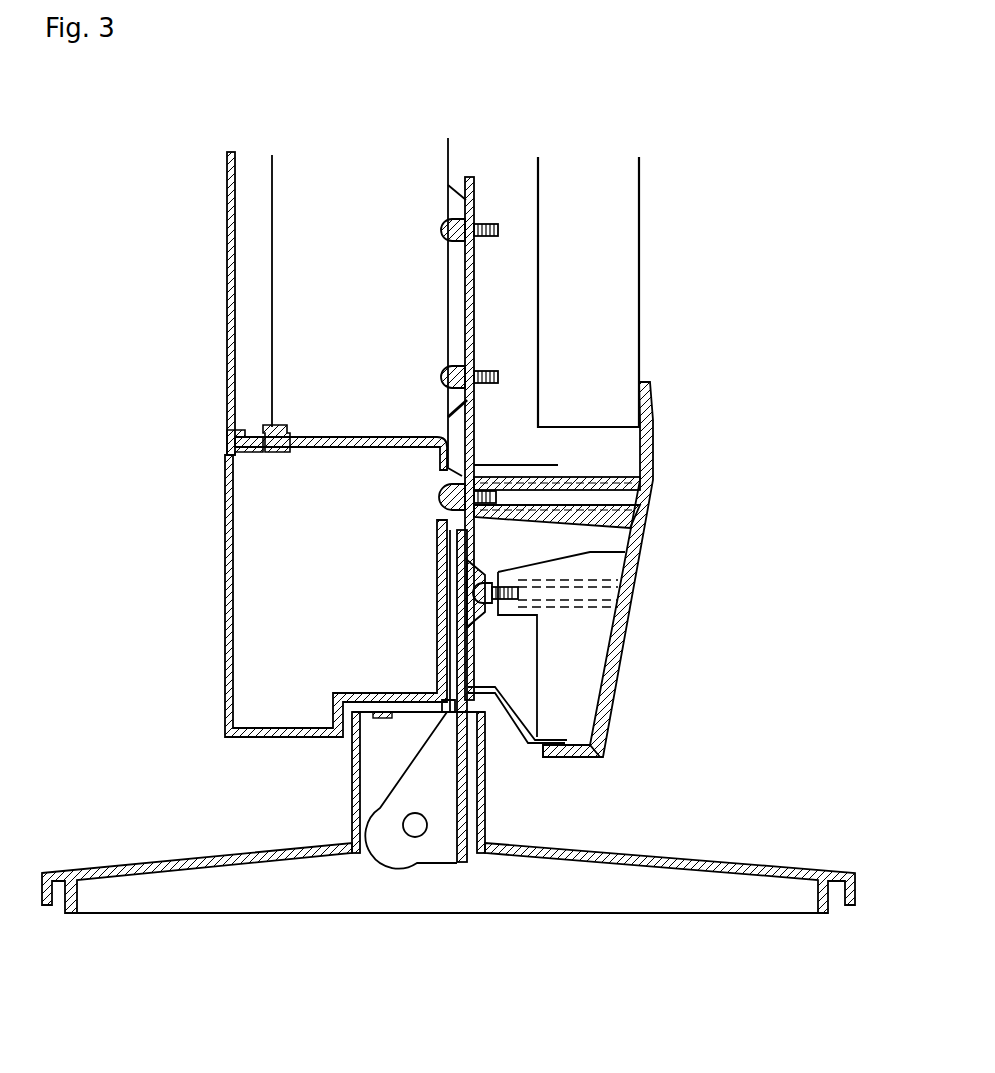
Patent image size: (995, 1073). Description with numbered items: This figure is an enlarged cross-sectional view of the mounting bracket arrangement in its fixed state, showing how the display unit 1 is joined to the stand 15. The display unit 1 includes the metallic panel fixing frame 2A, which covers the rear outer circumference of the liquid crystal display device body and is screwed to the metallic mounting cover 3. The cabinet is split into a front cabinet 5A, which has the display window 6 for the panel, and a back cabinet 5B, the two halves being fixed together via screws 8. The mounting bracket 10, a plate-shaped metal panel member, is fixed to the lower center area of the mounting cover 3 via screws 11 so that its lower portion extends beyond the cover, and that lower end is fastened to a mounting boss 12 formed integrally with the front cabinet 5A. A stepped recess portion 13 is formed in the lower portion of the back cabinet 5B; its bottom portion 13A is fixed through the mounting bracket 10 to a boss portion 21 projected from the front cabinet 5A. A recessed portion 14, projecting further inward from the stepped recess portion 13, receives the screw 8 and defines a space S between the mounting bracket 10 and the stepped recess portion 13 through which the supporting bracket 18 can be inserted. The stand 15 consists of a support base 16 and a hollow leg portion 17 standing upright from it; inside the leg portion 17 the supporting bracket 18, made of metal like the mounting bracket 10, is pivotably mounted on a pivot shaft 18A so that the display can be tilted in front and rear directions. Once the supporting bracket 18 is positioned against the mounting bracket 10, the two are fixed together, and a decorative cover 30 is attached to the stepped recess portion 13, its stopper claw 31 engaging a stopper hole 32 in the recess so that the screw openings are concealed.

The display unit 1 is at (653, 262).
The panel fixing frame 2A is at (602, 247).
The mounting cover 3 is at (448, 158).
The front cabinet 5A is at (643, 510).
The back cabinet 5B is at (225, 193).
The display window 6 is at (640, 378).
The screws 8 is at (450, 447).
The mounting bracket 10 is at (476, 294).
The screws 11 is at (448, 375).
The mounting boss 12 is at (582, 607).
The stepped recess portion 13 is at (350, 447).
The bottom portion 13A is at (440, 600).
The recessed portion 14 is at (437, 518).
The stand 15 is at (815, 852).
The support base 16 is at (727, 867).
The leg portion 17 is at (353, 797).
The supporting bracket 18 is at (463, 787).
The pivot shaft 18A is at (415, 837).
The boss portion 21 is at (600, 477).
The decorative cover 30 is at (227, 593).
The stopper claw 31 is at (227, 457).
The stopper hole 32 is at (272, 430).
The space S is at (453, 635).